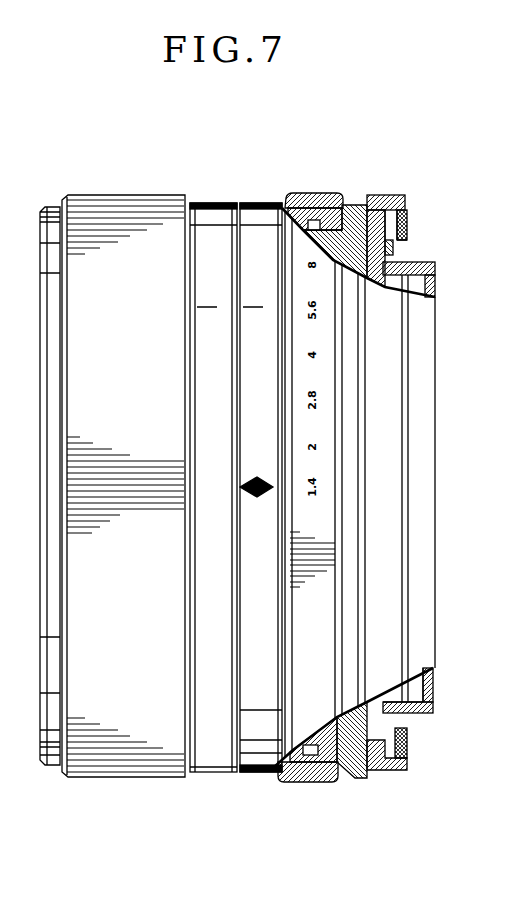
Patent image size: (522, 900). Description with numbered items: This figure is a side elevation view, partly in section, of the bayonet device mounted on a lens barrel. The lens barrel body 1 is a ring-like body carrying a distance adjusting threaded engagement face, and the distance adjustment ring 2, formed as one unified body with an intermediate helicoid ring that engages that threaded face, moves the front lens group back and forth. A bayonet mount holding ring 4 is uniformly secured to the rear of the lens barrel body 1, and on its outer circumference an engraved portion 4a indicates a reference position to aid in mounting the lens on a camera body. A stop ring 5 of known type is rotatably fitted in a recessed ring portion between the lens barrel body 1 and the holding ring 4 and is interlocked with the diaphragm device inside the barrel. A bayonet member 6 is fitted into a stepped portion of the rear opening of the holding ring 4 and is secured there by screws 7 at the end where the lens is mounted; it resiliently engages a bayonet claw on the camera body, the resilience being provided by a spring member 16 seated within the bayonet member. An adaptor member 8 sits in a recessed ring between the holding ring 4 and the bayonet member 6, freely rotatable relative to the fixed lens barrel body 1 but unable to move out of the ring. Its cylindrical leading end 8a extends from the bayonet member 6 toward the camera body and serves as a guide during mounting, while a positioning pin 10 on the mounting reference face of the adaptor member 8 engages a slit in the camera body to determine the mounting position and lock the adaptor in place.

The lens barrel body 1 is at (342, 196).
The distance adjustment ring 2 is at (222, 212).
The bayonet mount holding ring 4 is at (355, 220).
The engraved portion 4a is at (380, 195).
The stop ring 5 is at (303, 252).
The bayonet member 6 is at (407, 222).
The screws 7 is at (382, 782).
The adaptor member 8 is at (417, 712).
The leading end of the adaptor 8a is at (435, 278).
The positioning pin 10 is at (393, 248).
The spring member 16 is at (398, 720).